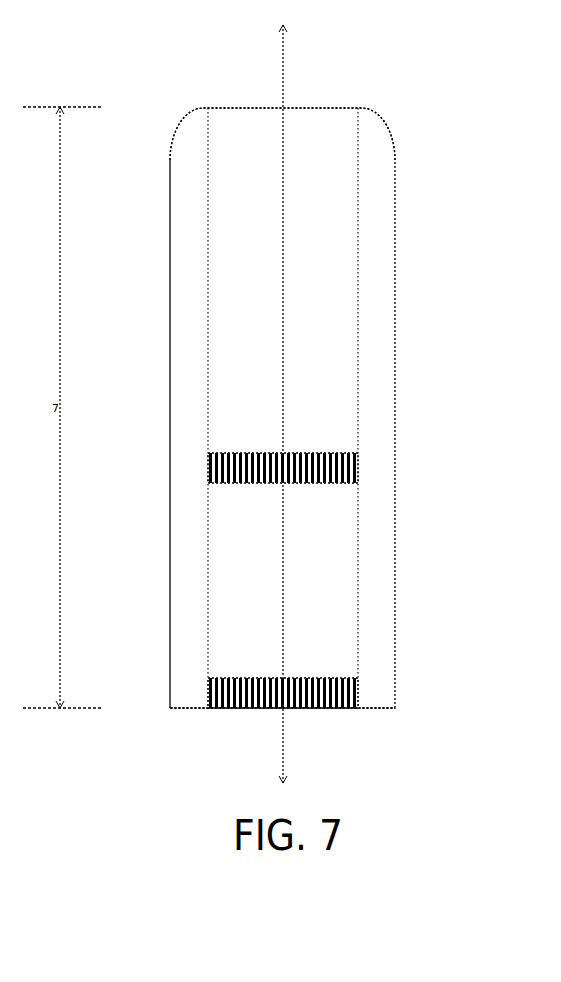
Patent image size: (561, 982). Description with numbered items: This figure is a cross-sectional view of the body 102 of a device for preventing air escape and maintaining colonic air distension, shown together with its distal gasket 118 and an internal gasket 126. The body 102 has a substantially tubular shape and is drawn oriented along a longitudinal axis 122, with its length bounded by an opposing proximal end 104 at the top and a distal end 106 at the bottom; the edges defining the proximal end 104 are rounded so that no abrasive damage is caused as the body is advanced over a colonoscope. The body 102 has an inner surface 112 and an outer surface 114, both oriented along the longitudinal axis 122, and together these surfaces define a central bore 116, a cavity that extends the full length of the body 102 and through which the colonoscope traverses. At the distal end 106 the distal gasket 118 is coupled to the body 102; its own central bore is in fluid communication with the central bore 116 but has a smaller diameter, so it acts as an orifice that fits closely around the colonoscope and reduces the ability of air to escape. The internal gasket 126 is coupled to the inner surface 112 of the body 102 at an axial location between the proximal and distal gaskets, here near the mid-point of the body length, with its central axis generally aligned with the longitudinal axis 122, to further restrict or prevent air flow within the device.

The body 102 is at (398, 302).
The proximal end 104 is at (386, 120).
The distal end 106 is at (403, 698).
The inner surface 112 is at (206, 357).
The outer surface 114 is at (170, 434).
The central bore 116 is at (262, 238).
The distal gasket 118 is at (357, 672).
The longitudinal axis 122 is at (322, 88).
The internal gasket 126 is at (360, 468).